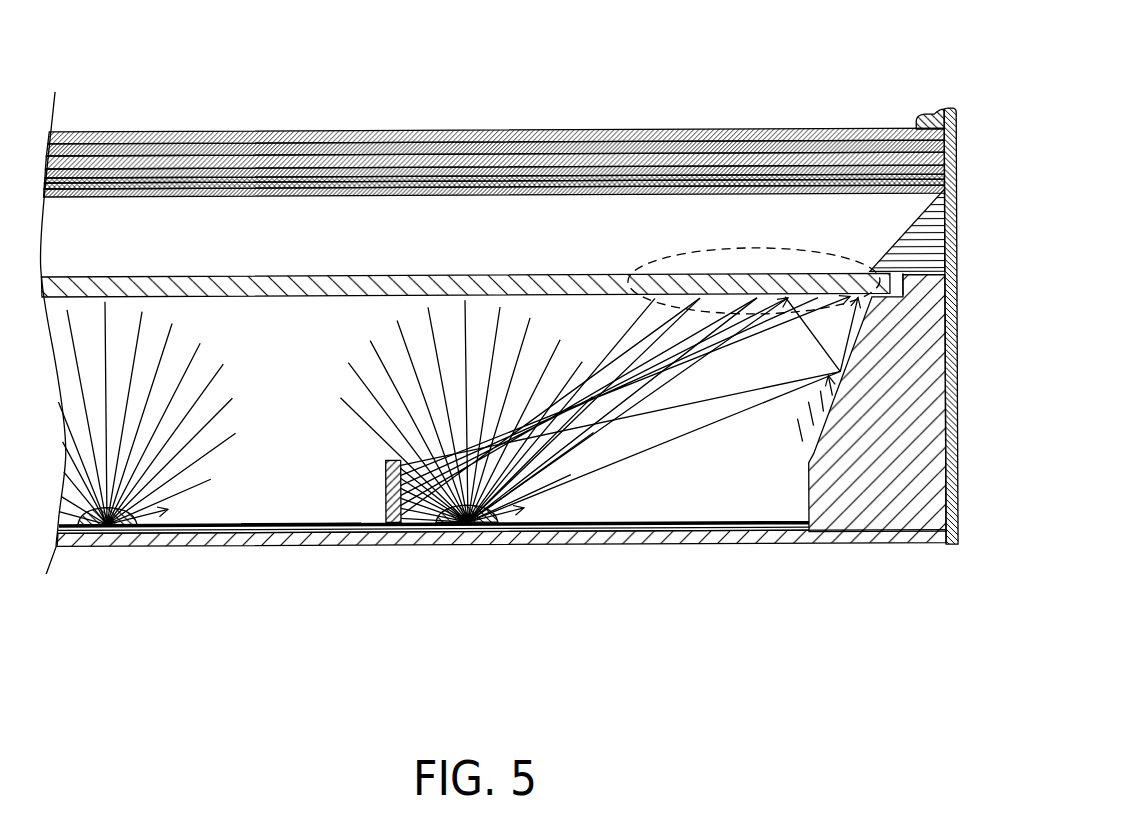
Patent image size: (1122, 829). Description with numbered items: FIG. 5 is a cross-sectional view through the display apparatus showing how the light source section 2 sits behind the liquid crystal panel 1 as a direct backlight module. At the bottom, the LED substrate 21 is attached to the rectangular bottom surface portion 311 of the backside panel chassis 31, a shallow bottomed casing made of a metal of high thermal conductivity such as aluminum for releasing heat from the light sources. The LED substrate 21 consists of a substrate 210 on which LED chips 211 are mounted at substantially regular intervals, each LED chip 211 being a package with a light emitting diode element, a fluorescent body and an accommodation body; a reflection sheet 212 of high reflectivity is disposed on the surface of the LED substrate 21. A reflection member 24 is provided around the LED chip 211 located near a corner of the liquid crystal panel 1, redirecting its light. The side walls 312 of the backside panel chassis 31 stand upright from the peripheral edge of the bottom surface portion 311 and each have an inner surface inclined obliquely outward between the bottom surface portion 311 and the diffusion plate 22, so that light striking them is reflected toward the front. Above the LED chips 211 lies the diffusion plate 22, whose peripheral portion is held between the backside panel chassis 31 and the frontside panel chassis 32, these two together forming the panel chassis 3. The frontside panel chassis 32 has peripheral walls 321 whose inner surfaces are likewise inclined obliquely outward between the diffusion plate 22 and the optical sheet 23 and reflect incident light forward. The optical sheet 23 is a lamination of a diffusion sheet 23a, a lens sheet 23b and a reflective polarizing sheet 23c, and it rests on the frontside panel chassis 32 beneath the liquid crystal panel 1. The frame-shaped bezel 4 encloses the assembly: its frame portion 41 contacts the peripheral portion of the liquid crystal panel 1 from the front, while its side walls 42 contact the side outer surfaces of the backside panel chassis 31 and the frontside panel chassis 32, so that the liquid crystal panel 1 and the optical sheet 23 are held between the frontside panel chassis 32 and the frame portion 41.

The liquid crystal panel 1 is at (494, 167).
The light source section 2 is at (285, 566).
The panel chassis 3 is at (577, 404).
The bezel 4 is at (960, 274).
The LED substrate 21 is at (706, 517).
The diffusion plate 22 is at (290, 296).
The optical sheet 23 is at (493, 225).
The diffusion sheet 23a is at (310, 180).
The lens sheet 23b is at (353, 186).
The reflective polarizing sheet 23c is at (265, 236).
The reflection member 24 is at (384, 512).
The backside panel chassis 31 is at (556, 447).
The frontside panel chassis 32 is at (948, 222).
The frame portion 41 is at (937, 82).
The side wall 42 is at (957, 155).
The substrate 210 is at (582, 531).
The LED chip 211 is at (124, 525).
The reflection sheet 212 is at (303, 521).
The bottom surface portion 311 is at (678, 538).
The side wall 312 is at (880, 493).
The peripheral wall 321 is at (876, 257).